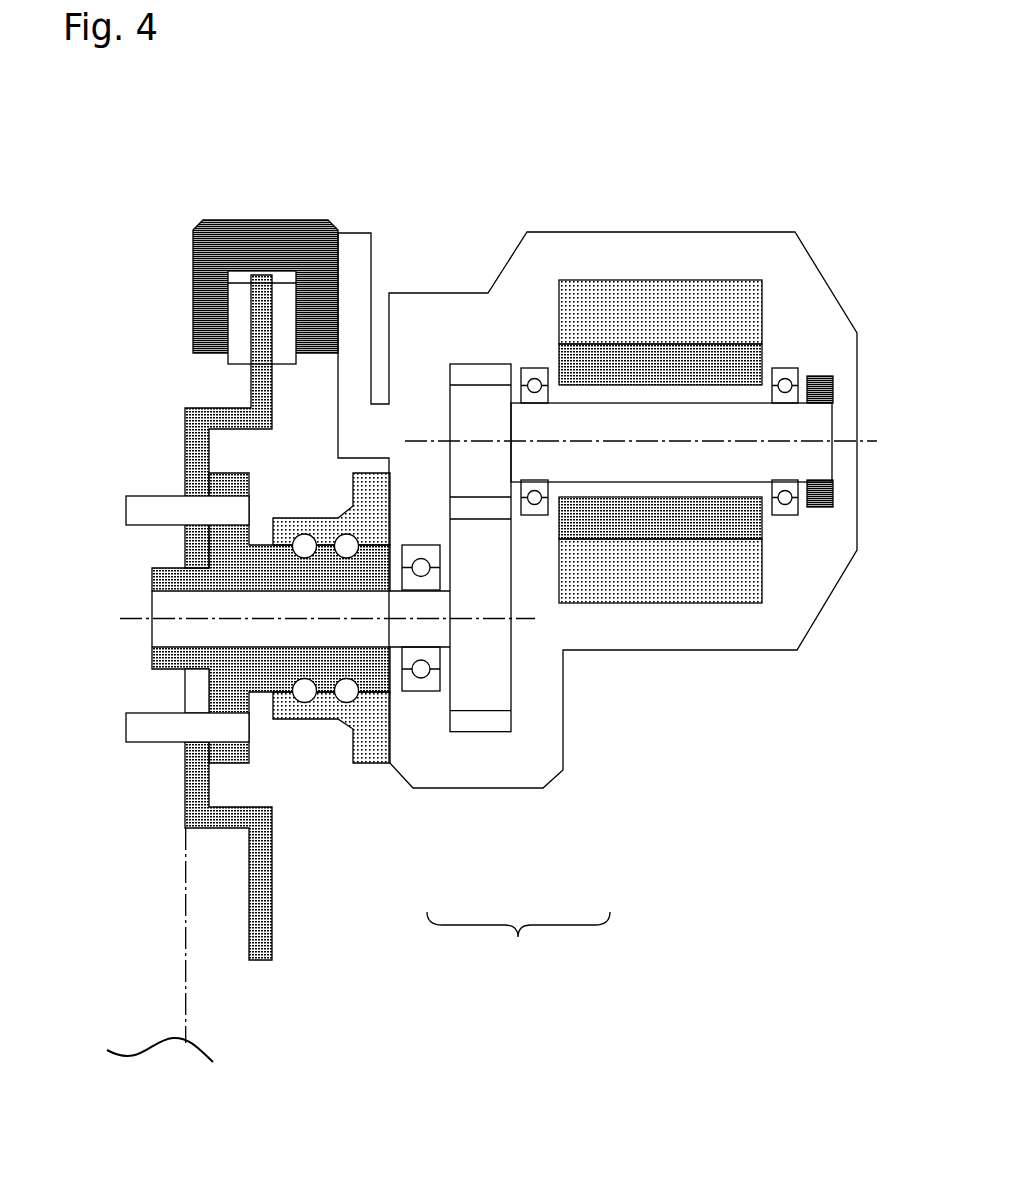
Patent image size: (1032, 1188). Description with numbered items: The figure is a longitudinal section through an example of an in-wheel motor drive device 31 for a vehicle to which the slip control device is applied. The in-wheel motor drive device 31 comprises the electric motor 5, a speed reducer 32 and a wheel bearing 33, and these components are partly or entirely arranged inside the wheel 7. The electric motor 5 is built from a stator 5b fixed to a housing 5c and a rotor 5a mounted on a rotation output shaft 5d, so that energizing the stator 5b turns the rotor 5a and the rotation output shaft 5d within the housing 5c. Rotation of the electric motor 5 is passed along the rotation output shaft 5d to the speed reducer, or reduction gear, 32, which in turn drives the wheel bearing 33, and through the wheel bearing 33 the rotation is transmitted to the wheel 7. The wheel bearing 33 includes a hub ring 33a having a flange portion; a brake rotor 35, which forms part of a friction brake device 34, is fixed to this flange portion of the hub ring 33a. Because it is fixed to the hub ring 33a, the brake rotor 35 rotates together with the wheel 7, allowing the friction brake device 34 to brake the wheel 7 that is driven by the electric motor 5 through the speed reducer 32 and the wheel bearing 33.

The electric motor 5 is at (657, 524).
The rotor 5a is at (747, 365).
The stator 5b is at (703, 310).
The housing 5c is at (805, 580).
The rotation output shaft 5d is at (598, 403).
The wheel 7 is at (185, 978).
The in-wheel motor drive device 31 is at (518, 943).
The speed reducer 32 is at (488, 733).
The wheel bearing 33 is at (312, 718).
The hub ring 33a is at (175, 574).
The friction brake device 34 is at (222, 218).
The brake rotor 35 is at (199, 434).